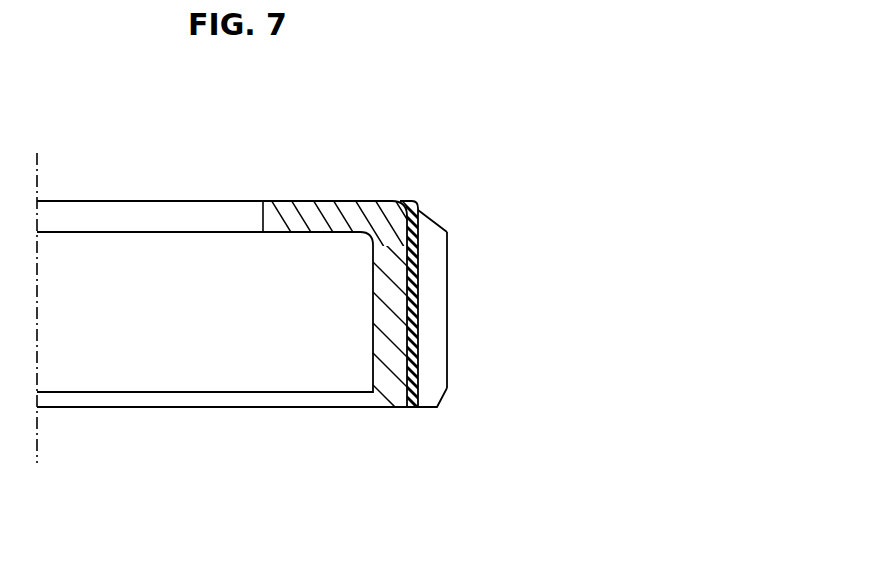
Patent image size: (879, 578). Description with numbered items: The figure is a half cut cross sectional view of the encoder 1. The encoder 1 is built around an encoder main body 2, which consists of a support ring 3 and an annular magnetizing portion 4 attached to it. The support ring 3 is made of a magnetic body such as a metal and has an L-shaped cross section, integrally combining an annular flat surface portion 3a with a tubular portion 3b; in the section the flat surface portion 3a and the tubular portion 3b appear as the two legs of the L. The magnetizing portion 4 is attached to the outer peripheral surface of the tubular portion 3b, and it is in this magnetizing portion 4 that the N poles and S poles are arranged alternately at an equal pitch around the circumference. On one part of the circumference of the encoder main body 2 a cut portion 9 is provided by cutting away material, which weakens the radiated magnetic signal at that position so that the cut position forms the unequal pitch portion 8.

The encoder 1 is at (110, 150).
The encoder main body 2 is at (403, 212).
The support ring 3 is at (377, 222).
The annular flat surface portion 3a is at (310, 207).
The tubular portion 3b is at (392, 393).
The magnetizing portion 4 is at (425, 212).
The unequal pitch portion 8 is at (440, 345).
The cut portion 9 is at (428, 298).